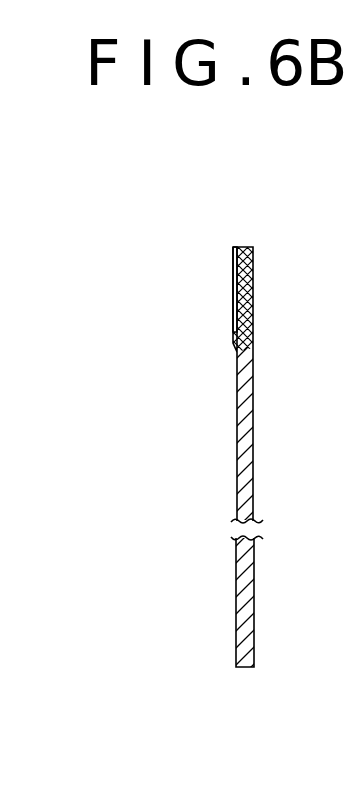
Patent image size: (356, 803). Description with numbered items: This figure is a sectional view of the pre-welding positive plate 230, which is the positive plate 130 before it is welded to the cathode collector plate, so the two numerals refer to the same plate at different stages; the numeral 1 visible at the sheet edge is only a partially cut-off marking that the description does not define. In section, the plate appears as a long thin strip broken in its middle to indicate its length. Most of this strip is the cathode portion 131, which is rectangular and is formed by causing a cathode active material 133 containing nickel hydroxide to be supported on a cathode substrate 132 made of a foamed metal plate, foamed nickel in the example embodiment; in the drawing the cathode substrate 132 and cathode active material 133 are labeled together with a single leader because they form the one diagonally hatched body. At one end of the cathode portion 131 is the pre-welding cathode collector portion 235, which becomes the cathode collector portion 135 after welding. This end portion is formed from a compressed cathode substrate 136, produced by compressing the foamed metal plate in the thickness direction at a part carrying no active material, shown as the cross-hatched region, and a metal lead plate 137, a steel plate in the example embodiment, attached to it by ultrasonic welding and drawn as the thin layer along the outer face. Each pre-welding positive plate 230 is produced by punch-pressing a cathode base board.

The image forming apparatus (partial) 1 is at (351, 417).
The pre-welding positive plate 230 is at (85, 268).
The positive plate 130 is at (132, 457).
The pre-welding cathode collector portion 235 is at (158, 265).
The cathode collector portion 135 is at (164, 299).
The metal lead plate 137 is at (236, 271).
The compressed cathode substrate 136 is at (238, 299).
The cathode portion 131 is at (161, 392).
The cathode substrate 132 is at (238, 432).
The cathode active material 133 is at (210, 547).